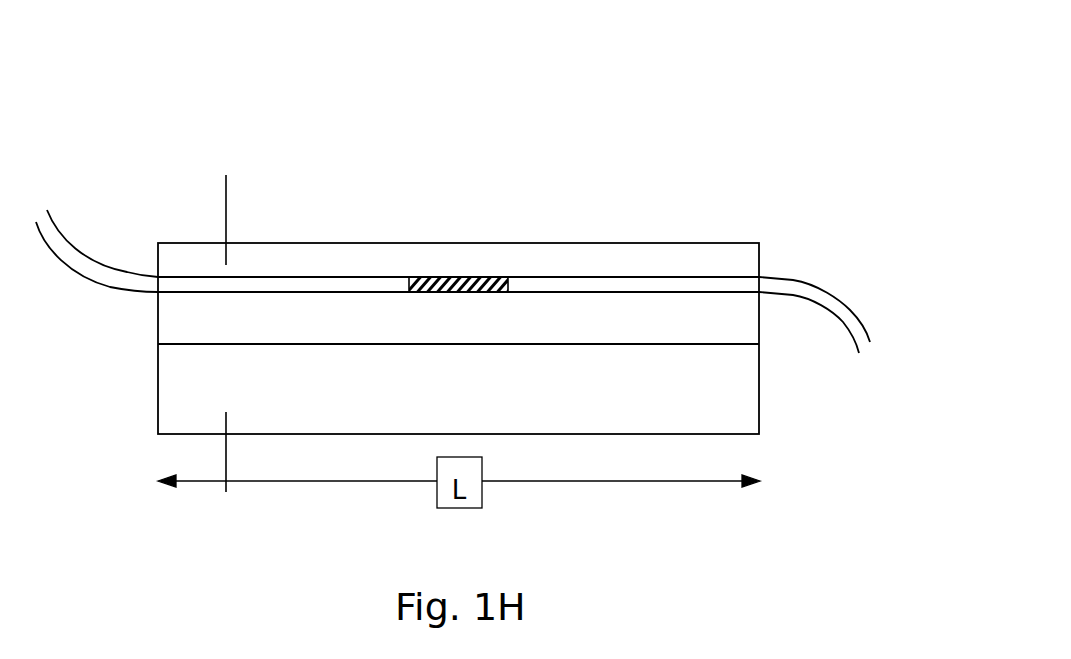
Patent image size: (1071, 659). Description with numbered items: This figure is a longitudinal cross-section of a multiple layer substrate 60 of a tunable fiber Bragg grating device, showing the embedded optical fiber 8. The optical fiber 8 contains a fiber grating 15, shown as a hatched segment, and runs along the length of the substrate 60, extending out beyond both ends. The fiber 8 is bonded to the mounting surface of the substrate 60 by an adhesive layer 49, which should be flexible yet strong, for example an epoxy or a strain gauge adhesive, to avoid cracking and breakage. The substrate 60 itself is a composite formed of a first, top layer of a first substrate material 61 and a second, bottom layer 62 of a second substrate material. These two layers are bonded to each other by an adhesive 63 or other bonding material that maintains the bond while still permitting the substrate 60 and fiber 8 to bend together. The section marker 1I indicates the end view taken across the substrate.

The substrate 60 is at (718, 158).
The optical fiber 8 is at (103, 277).
The fiber grating 15 is at (459, 277).
The adhesive layer 49 is at (613, 265).
The first substrate material 61 is at (193, 322).
The second layer 62 is at (182, 401).
The adhesive 63 is at (759, 344).
The section line for Fig. 1I is at (220, 470).